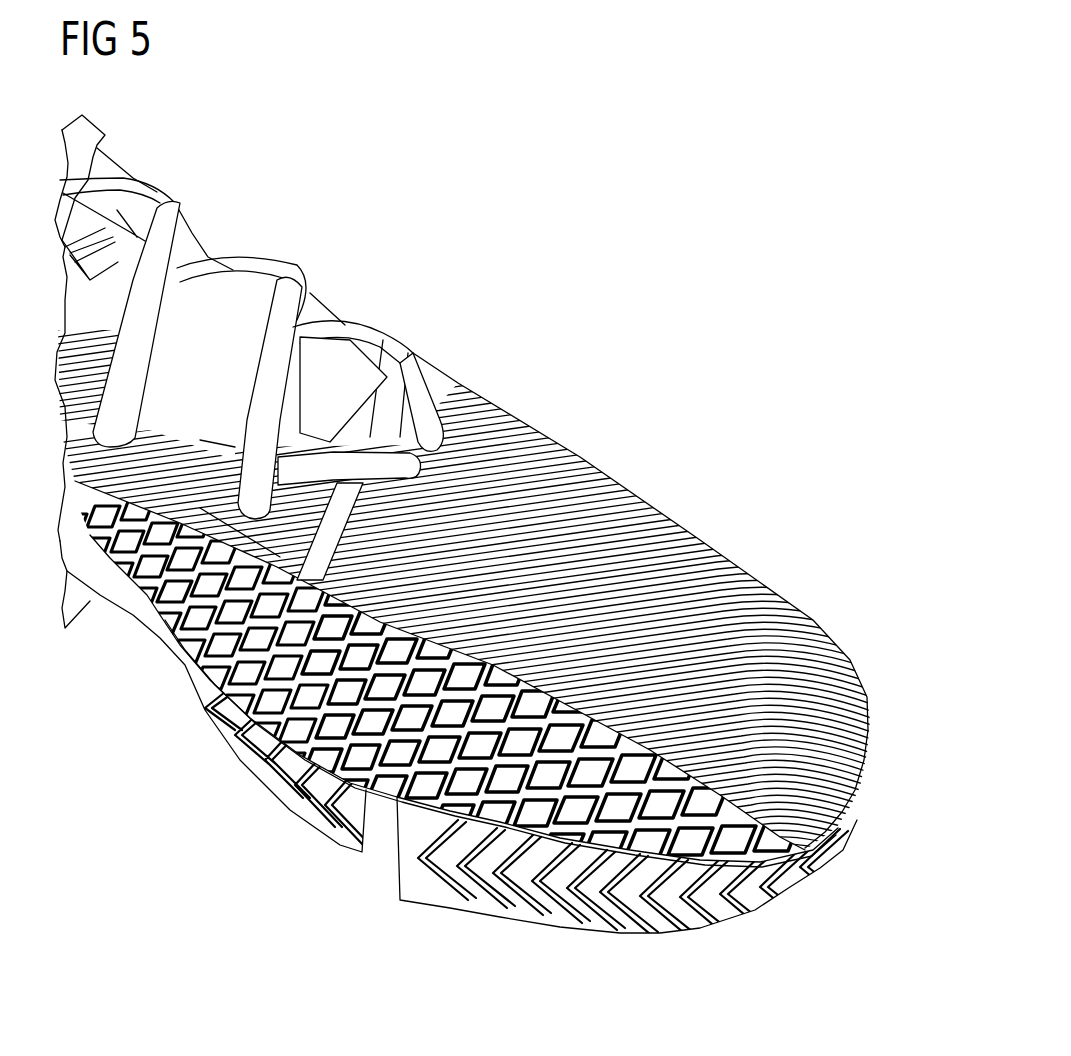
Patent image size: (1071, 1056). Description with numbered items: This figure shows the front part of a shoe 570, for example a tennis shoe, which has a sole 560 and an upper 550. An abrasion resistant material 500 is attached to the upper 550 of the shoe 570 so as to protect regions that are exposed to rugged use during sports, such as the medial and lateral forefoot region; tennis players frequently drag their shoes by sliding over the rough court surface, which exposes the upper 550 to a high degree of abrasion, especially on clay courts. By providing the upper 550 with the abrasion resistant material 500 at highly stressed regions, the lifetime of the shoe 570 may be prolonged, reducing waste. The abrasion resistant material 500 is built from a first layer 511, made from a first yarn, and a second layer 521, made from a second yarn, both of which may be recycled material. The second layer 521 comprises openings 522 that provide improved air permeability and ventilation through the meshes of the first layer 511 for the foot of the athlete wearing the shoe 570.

The abrasion resistant material 500 is at (578, 822).
The first layer 511 is at (403, 700).
The second layer 521 is at (463, 737).
The openings 522 is at (257, 677).
The upper 550 is at (683, 600).
The sole 560 is at (697, 935).
The shoe 570 is at (590, 372).